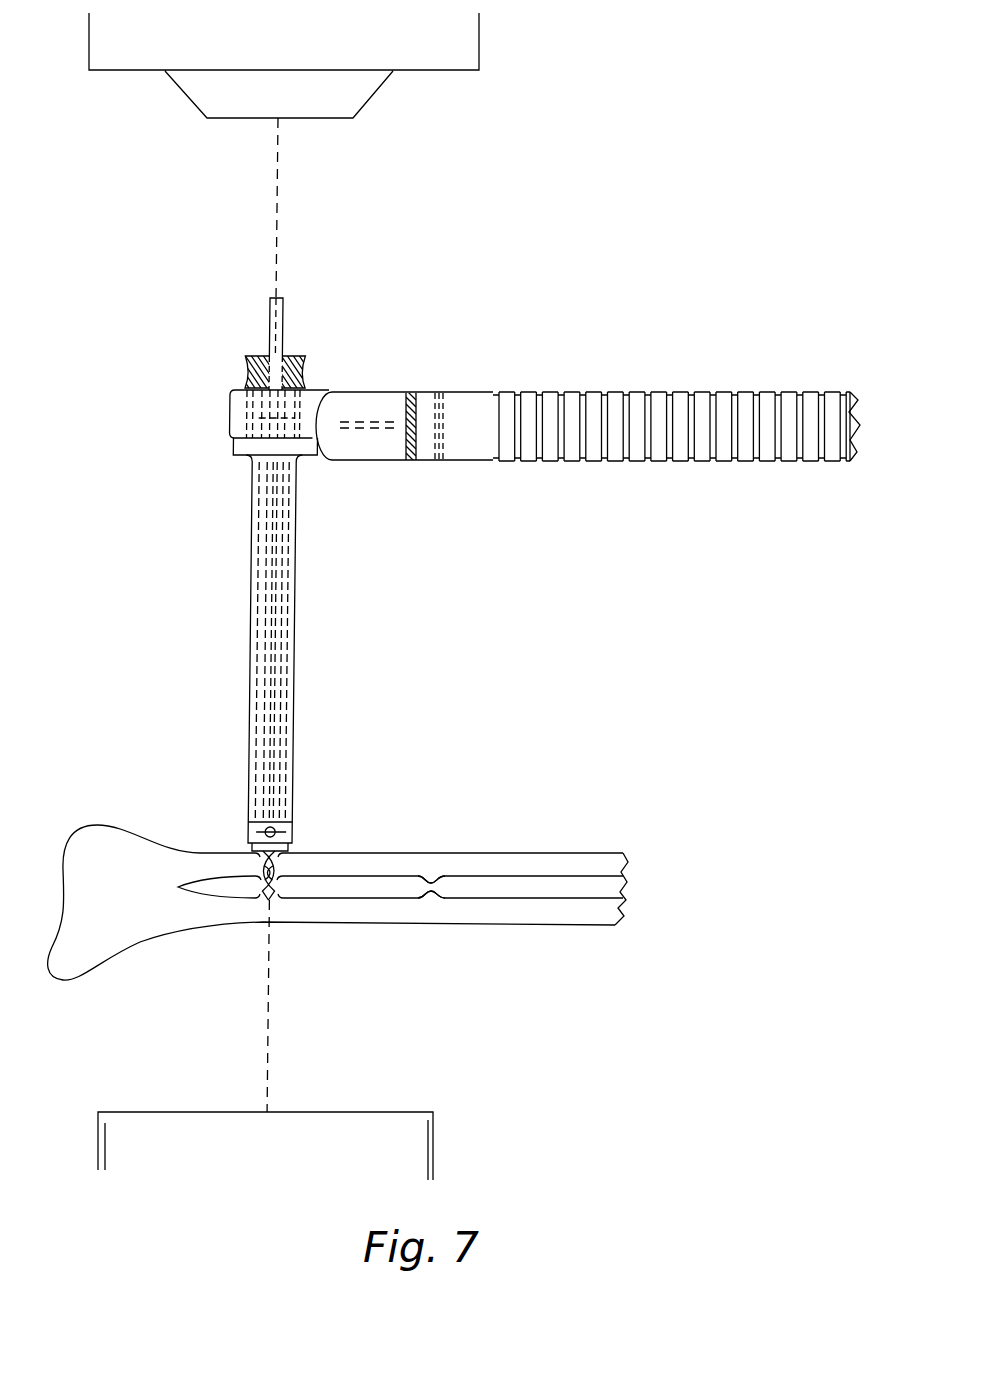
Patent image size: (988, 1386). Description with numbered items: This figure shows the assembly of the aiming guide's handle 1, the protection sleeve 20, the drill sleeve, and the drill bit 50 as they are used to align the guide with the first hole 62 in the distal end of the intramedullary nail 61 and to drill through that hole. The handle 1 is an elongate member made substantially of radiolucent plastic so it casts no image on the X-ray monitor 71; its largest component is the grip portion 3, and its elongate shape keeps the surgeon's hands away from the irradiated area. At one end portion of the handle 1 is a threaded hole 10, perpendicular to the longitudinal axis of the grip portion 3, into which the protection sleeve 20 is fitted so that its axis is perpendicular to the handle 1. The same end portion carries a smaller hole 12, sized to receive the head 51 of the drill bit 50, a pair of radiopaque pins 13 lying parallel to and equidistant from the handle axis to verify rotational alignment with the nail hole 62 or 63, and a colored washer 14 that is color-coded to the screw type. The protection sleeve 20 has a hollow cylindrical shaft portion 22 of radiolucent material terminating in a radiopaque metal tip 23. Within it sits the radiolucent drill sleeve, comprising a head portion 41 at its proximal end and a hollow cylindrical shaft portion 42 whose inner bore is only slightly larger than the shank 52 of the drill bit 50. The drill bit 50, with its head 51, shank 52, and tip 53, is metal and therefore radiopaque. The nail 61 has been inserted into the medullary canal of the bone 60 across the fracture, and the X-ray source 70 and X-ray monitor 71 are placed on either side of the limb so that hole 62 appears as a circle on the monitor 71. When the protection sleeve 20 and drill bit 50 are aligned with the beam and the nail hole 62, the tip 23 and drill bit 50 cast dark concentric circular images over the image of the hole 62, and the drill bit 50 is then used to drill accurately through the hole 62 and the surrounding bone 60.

The handle 1 is at (588, 427).
The grip portion 3 is at (750, 392).
The second threaded hole 10 is at (269, 387).
The hole 12 is at (440, 390).
The radiopaque pins 13 is at (372, 426).
The colored washer 14 is at (413, 463).
The protection sleeve 20 is at (282, 653).
The hollow cylindrical shaft portion 22 is at (250, 640).
The tip 23 is at (297, 845).
The head portion 41 is at (297, 372).
The hollow cylindrical shaft portion 42 is at (258, 508).
The drill bit 50 is at (281, 584).
The head 51 is at (284, 313).
The shank 52 is at (284, 612).
The tip 53 is at (258, 876).
The bone 60 is at (338, 889).
The intramedullary nail 61 is at (530, 895).
The first nail hole 62 is at (262, 901).
The second nail hole 63 is at (432, 898).
The X-ray source 70 is at (458, 16).
The X-ray monitor 71 is at (412, 1158).